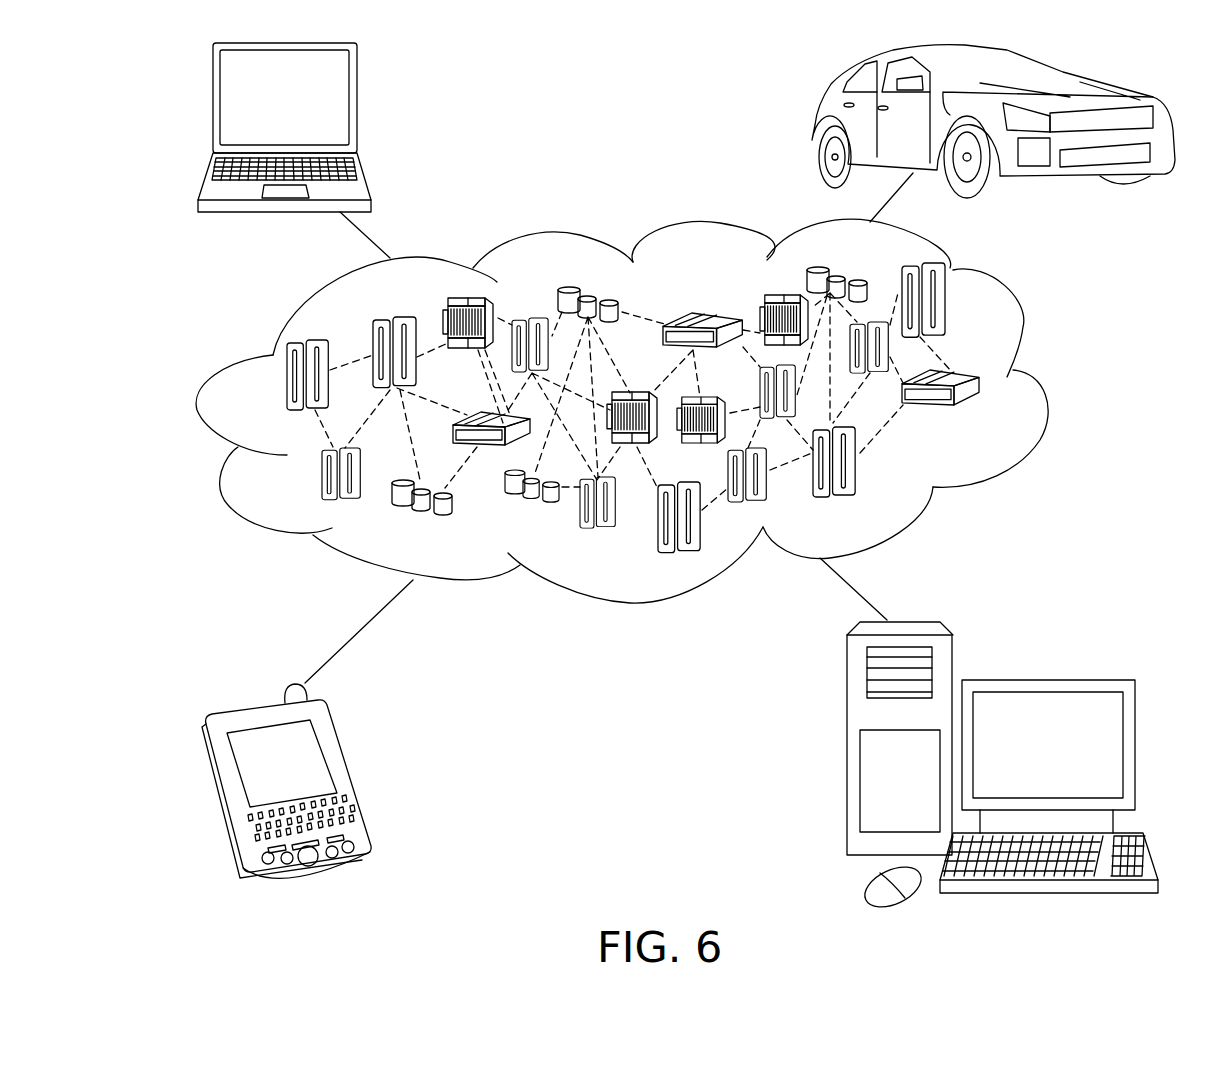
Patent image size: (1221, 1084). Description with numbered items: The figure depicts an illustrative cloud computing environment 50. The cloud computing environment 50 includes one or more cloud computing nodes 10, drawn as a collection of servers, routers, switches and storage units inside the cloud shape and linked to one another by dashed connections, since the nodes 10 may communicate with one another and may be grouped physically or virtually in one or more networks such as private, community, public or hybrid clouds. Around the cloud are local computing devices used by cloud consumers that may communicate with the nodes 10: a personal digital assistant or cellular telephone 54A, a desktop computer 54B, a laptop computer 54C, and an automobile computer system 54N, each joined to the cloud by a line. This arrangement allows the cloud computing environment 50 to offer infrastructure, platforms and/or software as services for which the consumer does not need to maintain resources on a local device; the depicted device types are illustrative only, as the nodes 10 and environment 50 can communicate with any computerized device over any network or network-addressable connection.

The cloud computing node 10 is at (992, 420).
The cloud computing environment 50 is at (651, 411).
The personal digital assistant or cellular telephone 54A is at (350, 777).
The desktop computer 54B is at (1047, 678).
The laptop computer 54C is at (357, 108).
The automobile computer system 54N is at (820, 126).